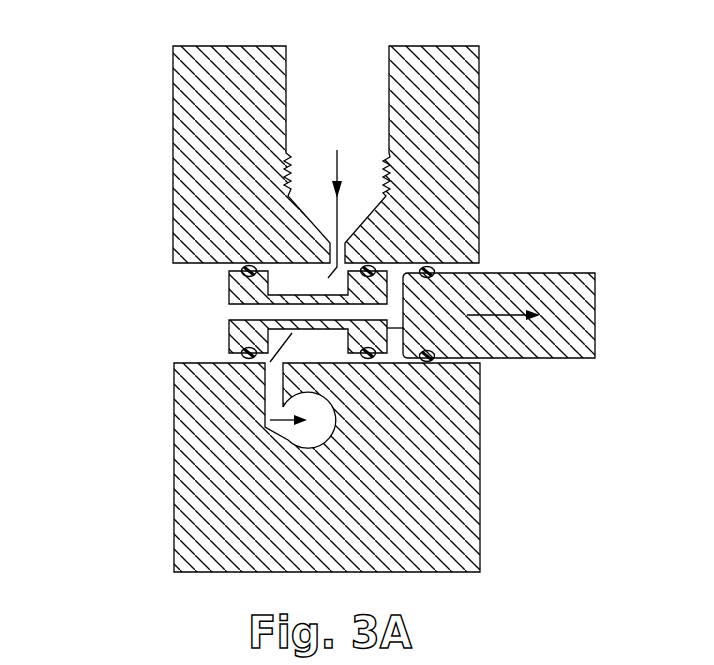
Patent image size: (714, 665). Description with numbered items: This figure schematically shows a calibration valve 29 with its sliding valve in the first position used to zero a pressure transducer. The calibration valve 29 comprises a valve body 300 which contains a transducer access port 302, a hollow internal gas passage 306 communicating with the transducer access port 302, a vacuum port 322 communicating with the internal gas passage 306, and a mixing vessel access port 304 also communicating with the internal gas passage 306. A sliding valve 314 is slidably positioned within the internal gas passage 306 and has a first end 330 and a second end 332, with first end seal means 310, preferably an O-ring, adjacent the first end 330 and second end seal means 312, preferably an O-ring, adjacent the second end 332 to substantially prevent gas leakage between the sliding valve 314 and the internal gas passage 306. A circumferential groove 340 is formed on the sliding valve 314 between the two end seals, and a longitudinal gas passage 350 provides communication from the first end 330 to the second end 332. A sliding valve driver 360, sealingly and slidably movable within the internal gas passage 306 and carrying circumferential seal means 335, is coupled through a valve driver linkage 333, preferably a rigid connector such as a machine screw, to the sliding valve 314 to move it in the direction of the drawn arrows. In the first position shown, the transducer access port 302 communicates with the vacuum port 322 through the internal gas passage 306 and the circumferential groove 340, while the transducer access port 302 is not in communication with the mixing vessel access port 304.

The calibration valve 29 is at (102, 102).
The valve body 300 is at (480, 128).
The transducer access port 302 is at (354, 41).
The mixing vessel access port 304 is at (150, 306).
The hollow internal gas passage 306 is at (306, 272).
The first end seal means 310 is at (220, 230).
The second end seal means 312 is at (367, 268).
The sliding valve 314 is at (233, 333).
The vacuum port 322 is at (318, 432).
The first end 330 is at (227, 290).
The second end 332 is at (393, 300).
The valve driver linkage 333 is at (390, 330).
The circumferential seal means 335 is at (440, 357).
The circumferential groove 340 is at (308, 333).
The longitudinal gas passage 350 is at (233, 312).
The sliding valve driver 360 is at (597, 313).